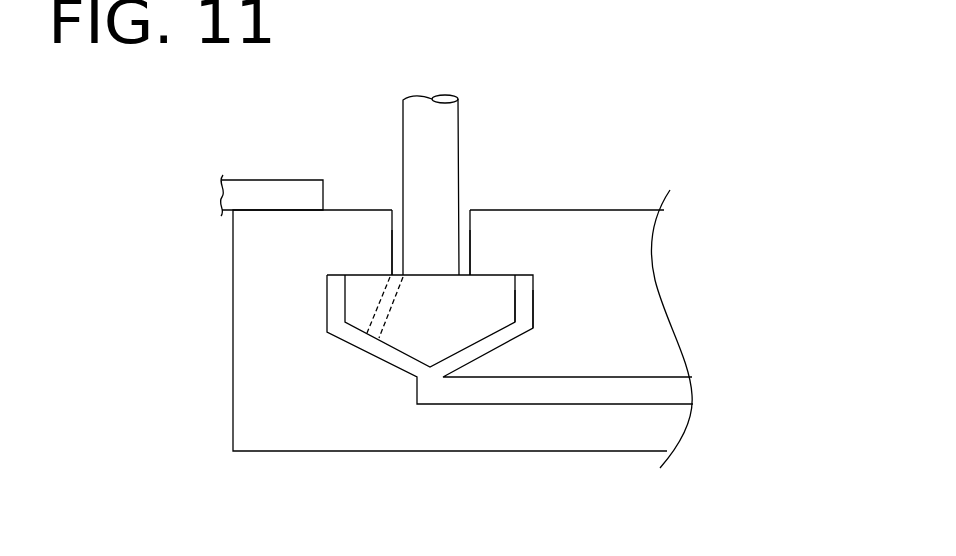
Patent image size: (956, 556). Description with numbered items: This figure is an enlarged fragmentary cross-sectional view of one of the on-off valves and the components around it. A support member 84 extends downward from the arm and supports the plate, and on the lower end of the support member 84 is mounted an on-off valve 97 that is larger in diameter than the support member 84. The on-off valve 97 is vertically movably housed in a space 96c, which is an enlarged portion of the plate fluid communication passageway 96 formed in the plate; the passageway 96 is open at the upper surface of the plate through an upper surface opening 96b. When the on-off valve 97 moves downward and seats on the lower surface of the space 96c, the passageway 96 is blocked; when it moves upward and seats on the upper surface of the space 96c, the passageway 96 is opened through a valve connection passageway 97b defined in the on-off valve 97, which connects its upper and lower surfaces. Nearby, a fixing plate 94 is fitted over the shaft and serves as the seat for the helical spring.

The support member 84 is at (410, 122).
The fixing plate 94 is at (260, 186).
The plate fluid communication passageway 96 is at (652, 382).
The upper surface opening 96b is at (466, 205).
The space 96c is at (527, 308).
The on-off valve 97 is at (498, 283).
The valve connection passageway 97b is at (377, 337).